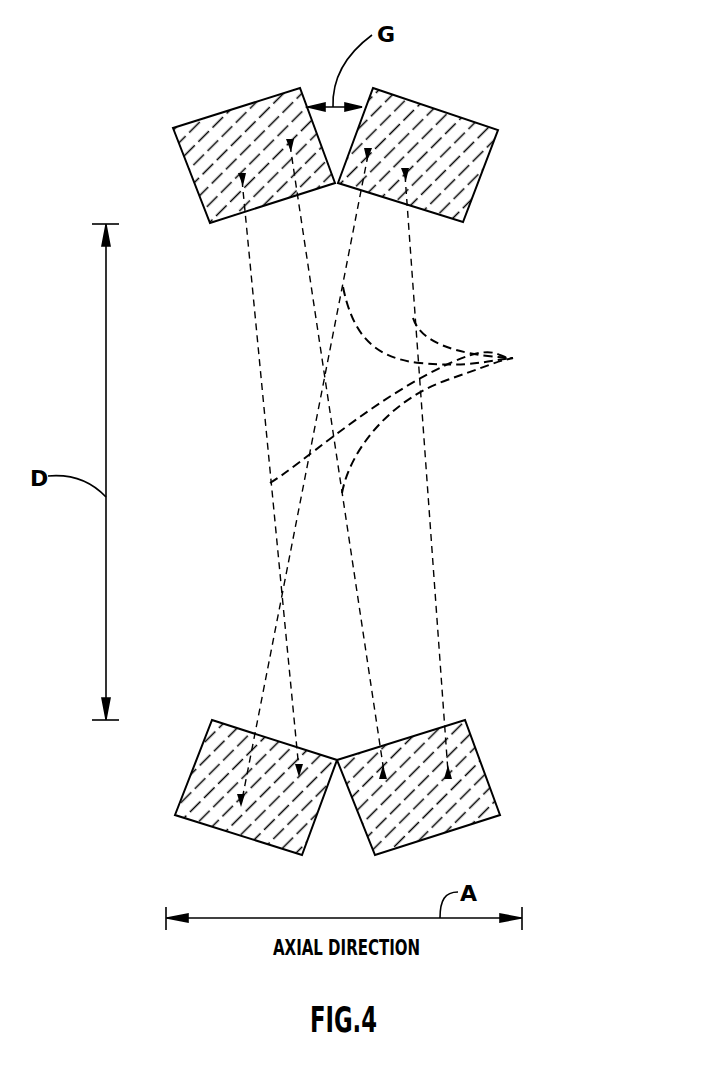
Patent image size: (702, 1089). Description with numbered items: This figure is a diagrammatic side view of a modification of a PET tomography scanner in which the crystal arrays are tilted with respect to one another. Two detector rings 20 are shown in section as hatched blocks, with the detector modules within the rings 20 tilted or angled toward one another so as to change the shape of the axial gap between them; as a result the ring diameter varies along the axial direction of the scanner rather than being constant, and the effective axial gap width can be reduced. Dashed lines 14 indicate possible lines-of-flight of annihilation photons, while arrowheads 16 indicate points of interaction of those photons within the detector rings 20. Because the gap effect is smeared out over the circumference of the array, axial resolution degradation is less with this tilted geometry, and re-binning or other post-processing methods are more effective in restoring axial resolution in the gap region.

The dashed lines 14 is at (403, 390).
The arrowheads 16 is at (285, 143).
The detector rings 20 is at (238, 108).